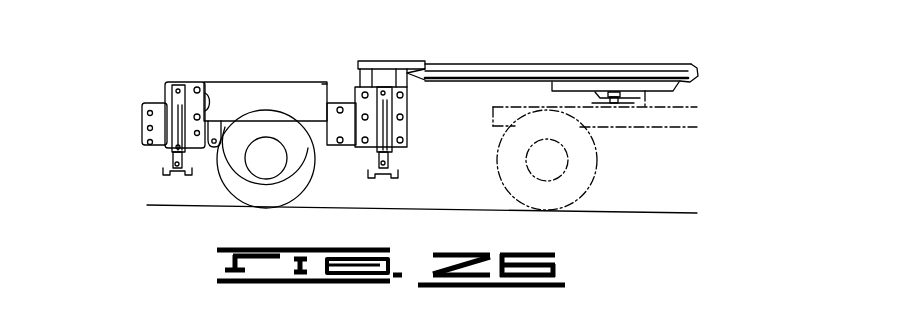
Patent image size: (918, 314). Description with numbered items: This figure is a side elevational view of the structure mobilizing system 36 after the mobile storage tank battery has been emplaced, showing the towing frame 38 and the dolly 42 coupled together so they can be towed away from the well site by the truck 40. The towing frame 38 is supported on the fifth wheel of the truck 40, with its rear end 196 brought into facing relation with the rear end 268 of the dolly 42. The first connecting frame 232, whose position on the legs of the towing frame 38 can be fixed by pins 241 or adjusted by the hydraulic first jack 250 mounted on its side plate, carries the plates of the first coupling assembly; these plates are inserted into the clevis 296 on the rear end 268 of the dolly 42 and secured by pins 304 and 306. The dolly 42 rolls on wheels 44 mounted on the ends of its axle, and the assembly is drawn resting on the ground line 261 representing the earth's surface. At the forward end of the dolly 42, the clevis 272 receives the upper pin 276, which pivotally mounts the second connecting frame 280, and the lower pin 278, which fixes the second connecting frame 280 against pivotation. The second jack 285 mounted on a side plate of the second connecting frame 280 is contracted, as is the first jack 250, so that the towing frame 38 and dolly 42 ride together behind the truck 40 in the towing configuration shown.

The structure mobilizing system 36 is at (647, 48).
The towing frame 38 is at (673, 72).
The truck 40 is at (625, 128).
The dolly 42 is at (262, 94).
The wheels 44 is at (230, 178).
The rear end 196 is at (353, 64).
The first connecting frame 232 is at (407, 105).
The pins 241 is at (404, 118).
The first jack 250 is at (392, 147).
The ground surface 261 is at (440, 207).
The rear end 268 is at (334, 86).
The clevis 272 is at (197, 103).
The upper pin 276 is at (197, 88).
The lower pin 278 is at (199, 116).
The second connecting frame 280 is at (142, 118).
The second jack 285 is at (173, 137).
The clevis 296 is at (330, 143).
The pin 304 is at (338, 110).
The pin 306 is at (343, 143).